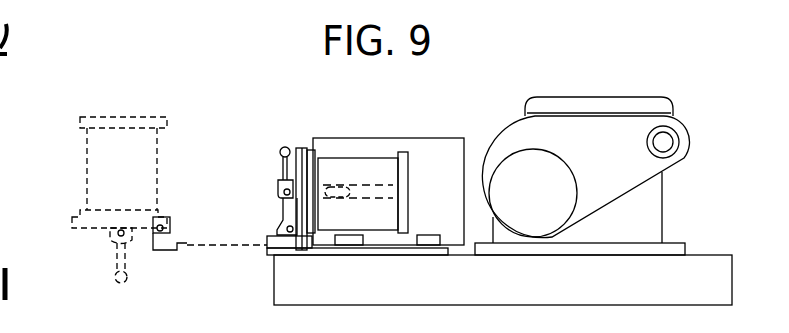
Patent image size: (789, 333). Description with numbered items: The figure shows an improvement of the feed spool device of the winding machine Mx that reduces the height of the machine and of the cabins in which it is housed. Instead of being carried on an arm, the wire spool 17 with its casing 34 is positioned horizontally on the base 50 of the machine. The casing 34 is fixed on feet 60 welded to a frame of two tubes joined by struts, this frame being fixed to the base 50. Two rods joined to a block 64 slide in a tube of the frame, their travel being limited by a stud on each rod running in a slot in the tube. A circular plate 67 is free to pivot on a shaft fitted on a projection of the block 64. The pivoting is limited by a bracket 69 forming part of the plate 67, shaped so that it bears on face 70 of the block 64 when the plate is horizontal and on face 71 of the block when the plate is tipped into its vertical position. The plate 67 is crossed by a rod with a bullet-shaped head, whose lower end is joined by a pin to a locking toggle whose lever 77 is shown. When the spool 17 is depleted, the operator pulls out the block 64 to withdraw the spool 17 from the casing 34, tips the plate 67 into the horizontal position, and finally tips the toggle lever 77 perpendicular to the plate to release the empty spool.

The wire spool 17 is at (87, 160).
The casing 34 is at (438, 143).
The base 50 is at (713, 263).
The feet 60 is at (433, 246).
The block 64 is at (267, 248).
The circular plate 67 is at (302, 148).
The bracket 69 is at (282, 222).
The face of block 70 is at (278, 237).
The face of block 71 is at (178, 238).
The toggle lever 77 is at (283, 160).
The machine Mx is at (625, 85).